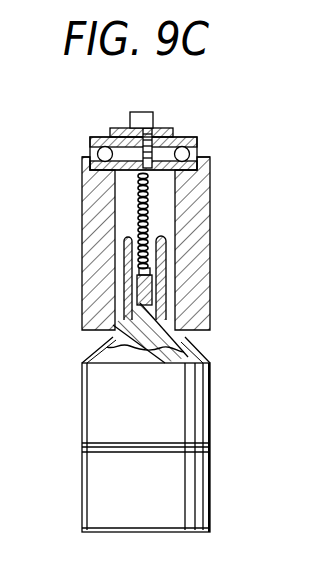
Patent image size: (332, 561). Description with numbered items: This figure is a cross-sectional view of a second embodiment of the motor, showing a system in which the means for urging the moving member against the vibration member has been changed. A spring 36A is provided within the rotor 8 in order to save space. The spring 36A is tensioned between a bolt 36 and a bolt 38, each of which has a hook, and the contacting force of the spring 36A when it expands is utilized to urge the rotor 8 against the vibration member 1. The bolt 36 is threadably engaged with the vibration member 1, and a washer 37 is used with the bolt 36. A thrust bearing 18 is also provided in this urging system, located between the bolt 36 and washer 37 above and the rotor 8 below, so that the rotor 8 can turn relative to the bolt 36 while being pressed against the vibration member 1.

The vibration member 1 is at (190, 393).
The rotor 8 is at (210, 255).
The thrust bearing 18 is at (197, 137).
The bolt 36 is at (155, 112).
The spring 36A is at (150, 200).
The washer 37 is at (153, 133).
The bolt 38 is at (153, 293).